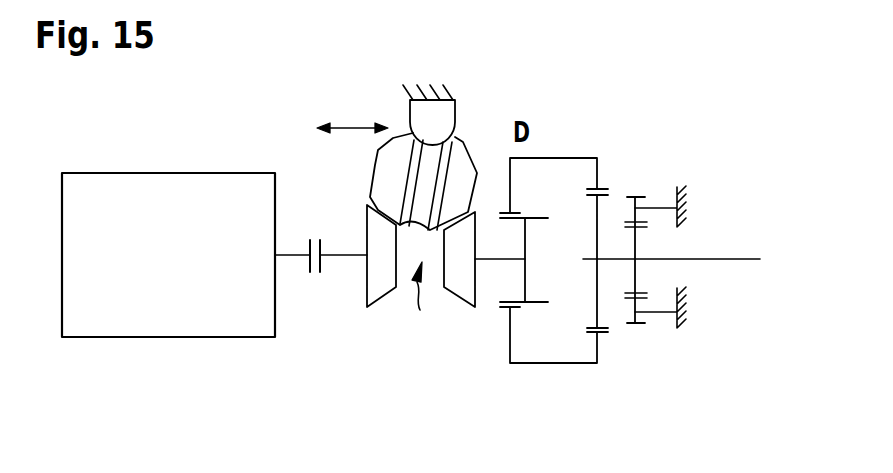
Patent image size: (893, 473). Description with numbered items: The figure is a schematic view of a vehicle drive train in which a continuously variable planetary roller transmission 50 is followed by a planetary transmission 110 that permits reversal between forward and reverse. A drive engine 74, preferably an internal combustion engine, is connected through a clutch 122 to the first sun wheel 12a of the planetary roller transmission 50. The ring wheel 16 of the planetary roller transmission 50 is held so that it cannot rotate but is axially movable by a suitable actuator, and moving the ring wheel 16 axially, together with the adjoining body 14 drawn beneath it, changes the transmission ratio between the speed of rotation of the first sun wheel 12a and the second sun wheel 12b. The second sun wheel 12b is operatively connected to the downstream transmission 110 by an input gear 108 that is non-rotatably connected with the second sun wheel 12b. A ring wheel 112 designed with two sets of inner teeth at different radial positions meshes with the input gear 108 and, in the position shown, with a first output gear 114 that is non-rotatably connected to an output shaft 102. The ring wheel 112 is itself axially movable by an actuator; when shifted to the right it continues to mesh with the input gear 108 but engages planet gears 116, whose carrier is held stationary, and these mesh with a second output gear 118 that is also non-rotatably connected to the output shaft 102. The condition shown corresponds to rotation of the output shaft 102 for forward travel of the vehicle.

The drive engine 74 is at (172, 188).
The clutch 122 is at (320, 270).
The ring wheel 16 is at (447, 113).
The shift fork body 14 is at (387, 180).
The first sun wheel 12a is at (388, 285).
The second sun wheel 12b is at (462, 290).
The planetary roller transmission 50 is at (419, 304).
The input gear 108 is at (525, 250).
The ring wheel 112 is at (548, 365).
The first output gear 114 is at (602, 317).
The transmission 110 is at (690, 196).
The planet gears 116 is at (638, 200).
The second output gear 118 is at (637, 247).
The output shaft 102 is at (735, 262).